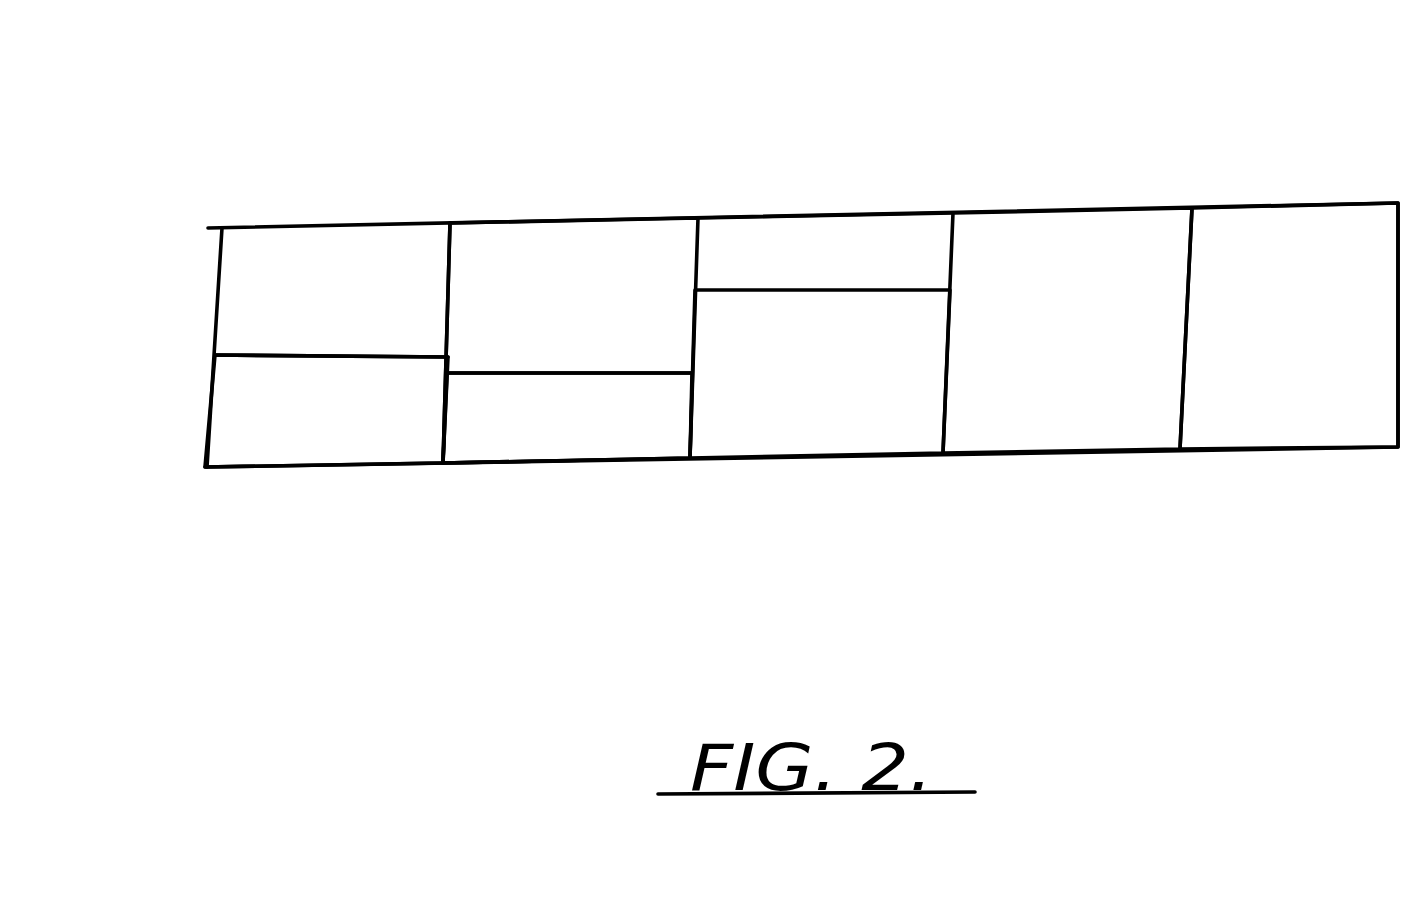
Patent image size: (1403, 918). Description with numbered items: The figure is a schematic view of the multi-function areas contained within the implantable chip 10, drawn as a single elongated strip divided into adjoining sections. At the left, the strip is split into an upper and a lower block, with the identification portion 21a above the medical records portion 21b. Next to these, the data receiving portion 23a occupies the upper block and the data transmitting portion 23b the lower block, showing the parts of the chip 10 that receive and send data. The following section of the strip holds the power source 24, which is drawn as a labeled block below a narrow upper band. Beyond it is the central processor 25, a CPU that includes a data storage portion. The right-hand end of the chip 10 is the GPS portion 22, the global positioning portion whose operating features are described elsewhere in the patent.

The chip 10 is at (832, 158).
The identification portion 21a is at (303, 257).
The medical records portion 21b is at (262, 445).
The GPS portion 22 is at (1342, 357).
The data receiving portion 23a is at (580, 250).
The data transmitting portion 23b is at (567, 418).
The power source 24 is at (840, 381).
The central processor 25 is at (1047, 233).